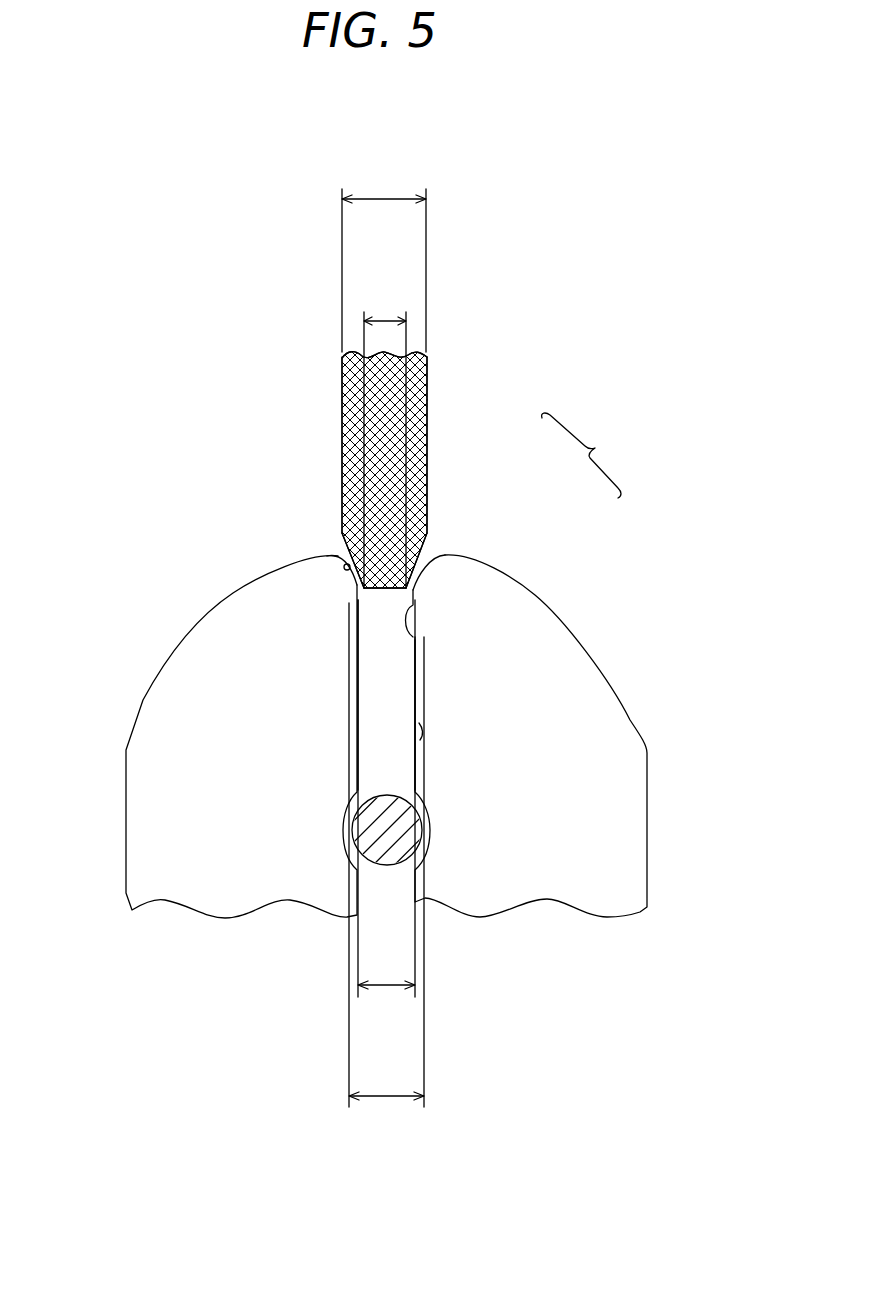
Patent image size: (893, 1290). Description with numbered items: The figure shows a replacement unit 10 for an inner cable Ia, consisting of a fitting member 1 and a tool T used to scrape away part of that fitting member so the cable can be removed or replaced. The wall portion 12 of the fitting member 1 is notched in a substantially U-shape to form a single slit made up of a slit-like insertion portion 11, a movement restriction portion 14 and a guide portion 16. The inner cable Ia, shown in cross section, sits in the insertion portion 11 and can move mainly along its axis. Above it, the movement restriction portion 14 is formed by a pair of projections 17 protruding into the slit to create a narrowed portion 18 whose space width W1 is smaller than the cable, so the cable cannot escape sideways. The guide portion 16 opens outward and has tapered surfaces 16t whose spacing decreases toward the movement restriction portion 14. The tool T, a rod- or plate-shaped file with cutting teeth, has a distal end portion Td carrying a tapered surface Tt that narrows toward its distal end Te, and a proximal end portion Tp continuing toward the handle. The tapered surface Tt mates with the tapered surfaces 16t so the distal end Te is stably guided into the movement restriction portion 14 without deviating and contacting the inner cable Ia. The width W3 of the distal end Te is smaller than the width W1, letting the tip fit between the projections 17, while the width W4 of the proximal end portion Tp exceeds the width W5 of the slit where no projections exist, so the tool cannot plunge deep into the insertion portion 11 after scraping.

The fitting member 1 is at (530, 572).
The replacement unit 10 is at (582, 455).
The insertion portion 11 is at (423, 725).
The wall portion 12 is at (175, 828).
The movement restriction portion 14 is at (438, 616).
The guide portion 16 is at (348, 585).
The tapered surfaces 16t is at (344, 566).
The projections 17 is at (418, 612).
The narrowed portion 18 is at (420, 637).
The inner cable Ia is at (390, 796).
The tool T is at (432, 462).
The proximal end portion Tp is at (352, 395).
The distal end portion Td is at (342, 487).
The tapered surface Tt is at (352, 560).
The distal end Te is at (387, 590).
The space width W1 is at (387, 987).
The width of distal end W3 is at (383, 198).
The width of proximal end portion W4 is at (382, 320).
The width of slit W5 is at (387, 1098).